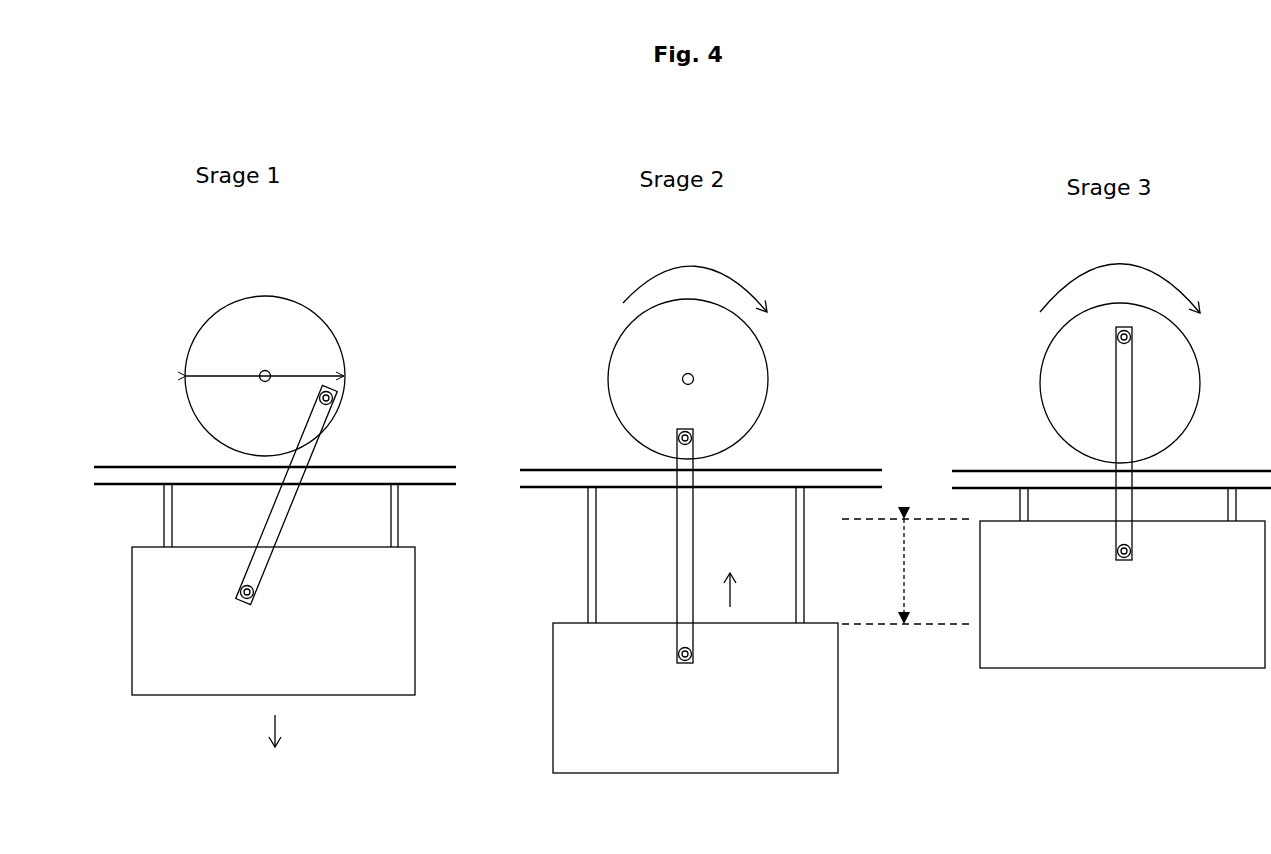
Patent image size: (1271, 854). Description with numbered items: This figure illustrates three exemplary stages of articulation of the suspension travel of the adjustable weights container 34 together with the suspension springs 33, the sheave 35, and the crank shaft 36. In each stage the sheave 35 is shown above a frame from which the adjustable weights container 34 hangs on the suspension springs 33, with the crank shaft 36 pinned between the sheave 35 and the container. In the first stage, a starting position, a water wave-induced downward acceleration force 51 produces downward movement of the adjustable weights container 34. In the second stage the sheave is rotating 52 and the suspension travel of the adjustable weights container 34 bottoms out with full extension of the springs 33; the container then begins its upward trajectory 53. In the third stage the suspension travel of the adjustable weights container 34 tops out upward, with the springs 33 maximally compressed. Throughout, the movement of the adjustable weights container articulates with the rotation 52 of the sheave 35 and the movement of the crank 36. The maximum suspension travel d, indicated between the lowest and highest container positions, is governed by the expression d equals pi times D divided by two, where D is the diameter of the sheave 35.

The suspension springs 33 is at (162, 520).
The adjustable weights container 34 is at (157, 623).
The sheave 35 is at (278, 333).
The crank shaft 36 is at (272, 540).
The downward acceleration force 51 is at (274, 746).
The sheave rotation 52 is at (924, 303).
The upward trajectory 53 is at (730, 575).
The sheave diameter D is at (212, 377).
The maximum suspension travel d is at (907, 571).